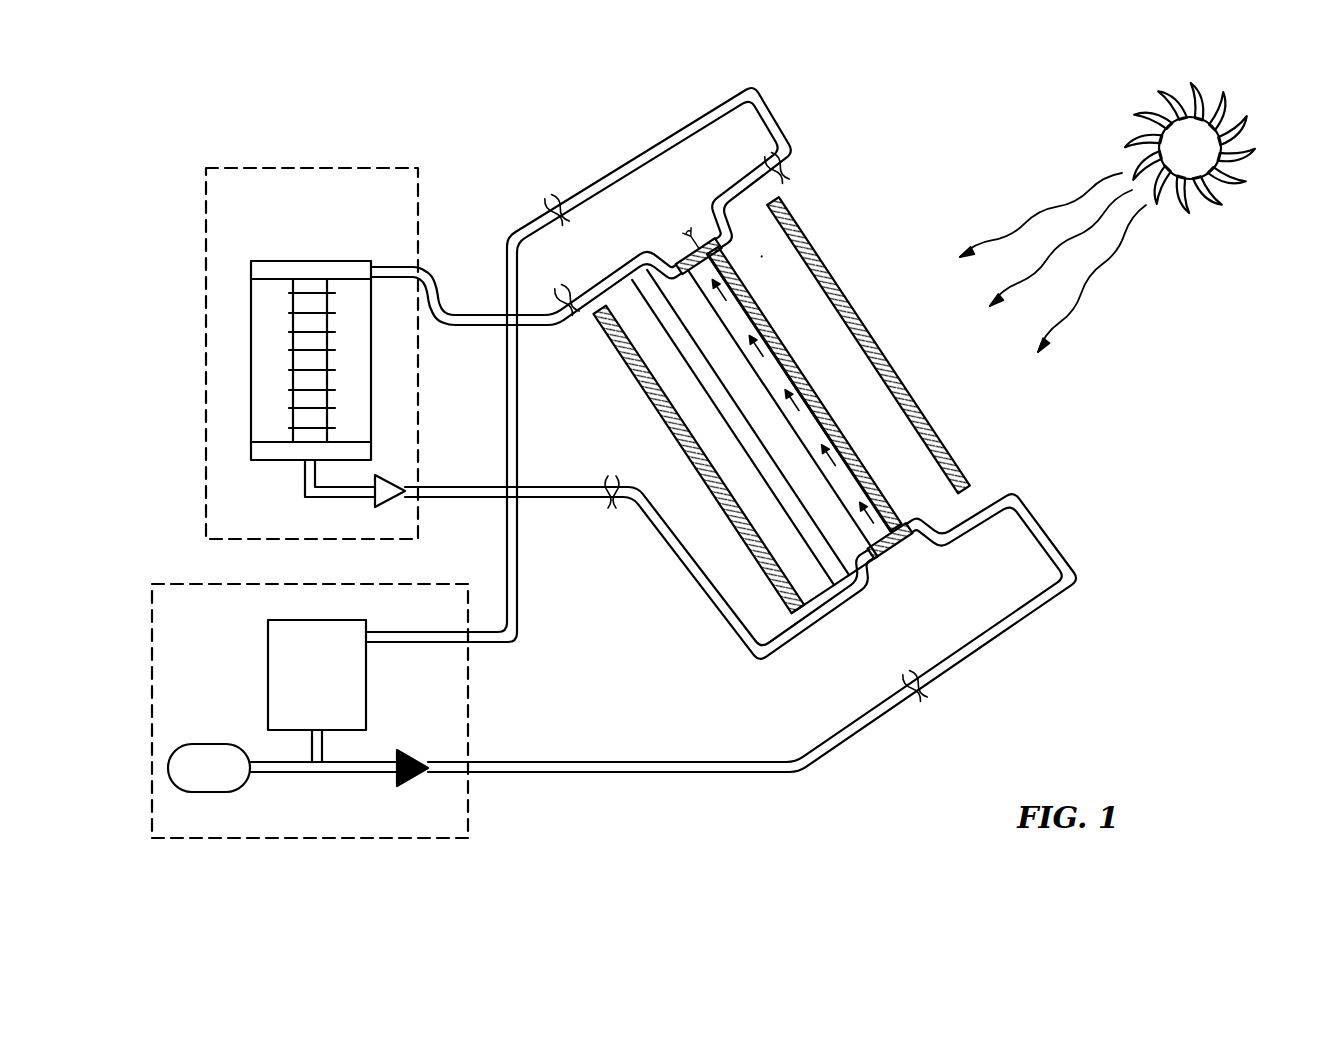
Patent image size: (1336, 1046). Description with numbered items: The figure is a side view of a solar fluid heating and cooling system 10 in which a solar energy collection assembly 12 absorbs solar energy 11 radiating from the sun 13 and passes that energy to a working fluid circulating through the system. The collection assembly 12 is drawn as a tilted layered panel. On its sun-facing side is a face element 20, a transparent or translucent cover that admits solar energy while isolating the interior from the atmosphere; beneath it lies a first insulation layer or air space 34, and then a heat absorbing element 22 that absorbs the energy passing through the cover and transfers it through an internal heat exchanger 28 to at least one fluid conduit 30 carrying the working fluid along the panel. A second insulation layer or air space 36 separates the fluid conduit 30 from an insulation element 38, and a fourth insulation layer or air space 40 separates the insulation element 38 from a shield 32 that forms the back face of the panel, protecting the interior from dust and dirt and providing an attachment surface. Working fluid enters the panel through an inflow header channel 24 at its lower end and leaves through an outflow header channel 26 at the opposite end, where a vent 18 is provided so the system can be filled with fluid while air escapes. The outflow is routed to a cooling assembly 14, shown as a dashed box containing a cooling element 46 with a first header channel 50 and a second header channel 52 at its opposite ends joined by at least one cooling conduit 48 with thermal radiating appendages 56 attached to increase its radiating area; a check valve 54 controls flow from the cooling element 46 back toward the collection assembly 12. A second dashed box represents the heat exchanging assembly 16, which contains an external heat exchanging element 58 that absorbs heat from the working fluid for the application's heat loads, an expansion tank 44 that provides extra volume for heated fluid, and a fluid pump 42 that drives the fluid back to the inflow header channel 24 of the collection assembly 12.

The system 10 is at (1030, 455).
The solar energy 11 is at (1020, 211).
The solar energy collection assembly 12 is at (845, 246).
The sun 13 is at (1178, 159).
The cooling assembly 14 is at (219, 204).
The heat exchanging assembly 16 is at (163, 617).
The vent 18 is at (693, 228).
The face element 20 is at (947, 447).
The heat absorbing element 22 is at (870, 477).
The inflow header channel 24 is at (893, 550).
The outflow header channel 26 is at (680, 265).
The internal heat exchanger 28 is at (778, 363).
The fluid conduit 30 is at (797, 433).
The shield 32 is at (720, 500).
The first insulation layer or air space 34 is at (782, 306).
The second insulation layer or air space 36 is at (694, 342).
The insulation element 38 is at (796, 507).
The fourth insulation layer or air space 40 is at (643, 361).
The fluid pump 42 is at (405, 785).
The expansion tank 44 is at (191, 781).
The cooling element 46 is at (295, 254).
The cooling conduit 48 is at (293, 340).
The first header channel 50 is at (352, 272).
The second header channel 52 is at (278, 452).
The check valve 54 is at (385, 500).
The fins 56 is at (300, 315).
The external heat exchanging element 58 is at (284, 661).